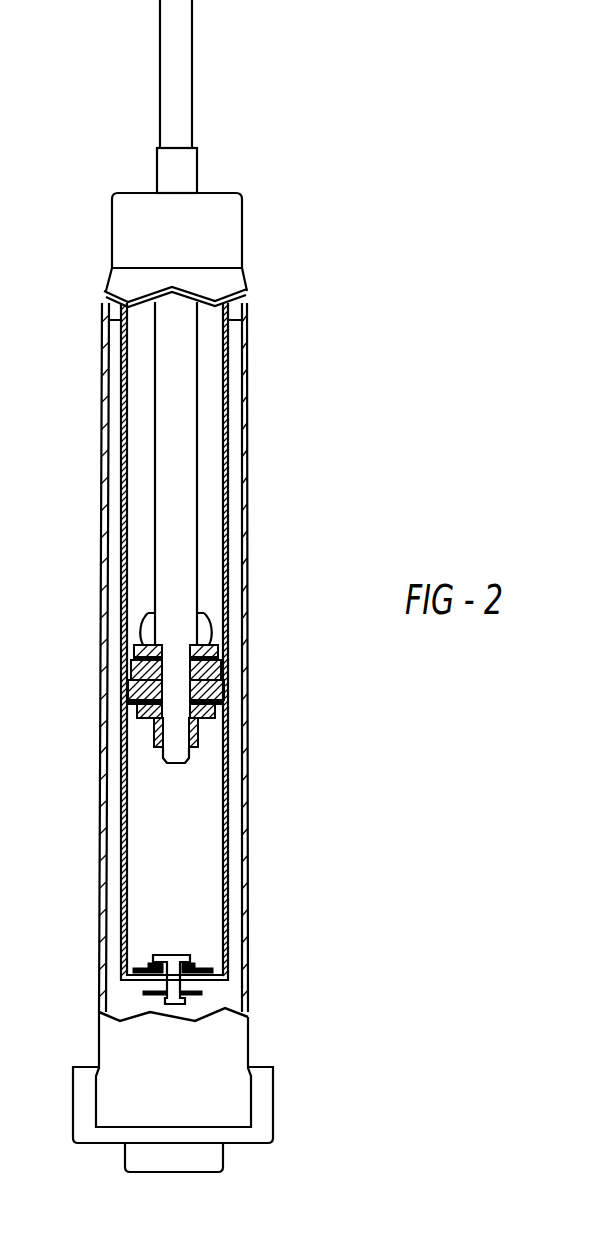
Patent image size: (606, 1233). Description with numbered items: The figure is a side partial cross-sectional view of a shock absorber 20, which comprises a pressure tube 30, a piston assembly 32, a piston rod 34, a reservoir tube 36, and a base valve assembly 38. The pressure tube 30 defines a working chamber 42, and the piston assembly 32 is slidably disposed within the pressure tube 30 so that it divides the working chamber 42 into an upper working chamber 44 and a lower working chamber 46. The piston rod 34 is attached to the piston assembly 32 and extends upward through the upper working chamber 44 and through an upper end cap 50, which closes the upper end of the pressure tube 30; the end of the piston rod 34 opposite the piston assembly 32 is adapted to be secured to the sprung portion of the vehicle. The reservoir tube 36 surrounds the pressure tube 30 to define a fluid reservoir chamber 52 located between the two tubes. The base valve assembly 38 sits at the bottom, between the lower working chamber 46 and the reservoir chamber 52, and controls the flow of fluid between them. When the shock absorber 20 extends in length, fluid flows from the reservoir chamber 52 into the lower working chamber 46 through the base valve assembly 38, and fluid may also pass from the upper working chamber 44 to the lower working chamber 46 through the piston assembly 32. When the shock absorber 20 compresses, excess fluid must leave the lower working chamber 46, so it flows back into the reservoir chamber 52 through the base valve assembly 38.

The shock absorber 20 is at (331, 144).
The upper end cap 50 is at (224, 230).
The piston rod 34 is at (193, 443).
The reservoir tube 36 is at (101, 575).
The pressure tube 30 is at (228, 457).
The upper working chamber 44 is at (207, 427).
The fluid reservoir chamber 52 is at (114, 494).
The piston assembly 32 is at (221, 644).
The working chamber 42 is at (193, 788).
The lower working chamber 46 is at (191, 859).
The base valve assembly 38 is at (201, 966).